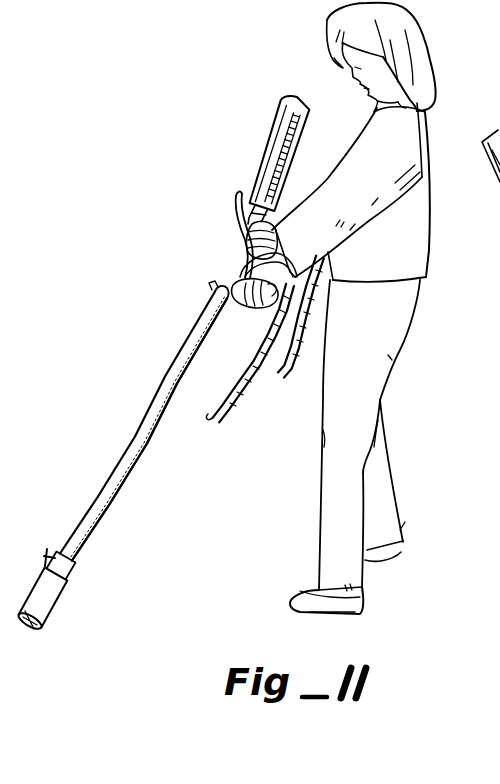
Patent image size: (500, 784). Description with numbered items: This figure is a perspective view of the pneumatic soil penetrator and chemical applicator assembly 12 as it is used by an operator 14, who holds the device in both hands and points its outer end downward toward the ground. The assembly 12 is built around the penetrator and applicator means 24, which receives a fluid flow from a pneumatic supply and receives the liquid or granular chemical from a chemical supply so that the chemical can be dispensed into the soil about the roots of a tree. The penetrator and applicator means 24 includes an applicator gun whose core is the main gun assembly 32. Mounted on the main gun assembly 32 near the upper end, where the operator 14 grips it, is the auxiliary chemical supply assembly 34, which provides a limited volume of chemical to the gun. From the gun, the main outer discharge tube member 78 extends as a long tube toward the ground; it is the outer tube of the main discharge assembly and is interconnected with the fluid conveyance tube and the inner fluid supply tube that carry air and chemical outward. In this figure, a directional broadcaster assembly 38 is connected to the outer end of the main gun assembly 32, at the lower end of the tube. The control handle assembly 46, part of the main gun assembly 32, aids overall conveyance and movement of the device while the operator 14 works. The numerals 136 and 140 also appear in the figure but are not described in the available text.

The pneumatic soil penetrator and chemical applicator assembly 12 is at (155, 394).
The operator 14 is at (403, 131).
The penetrator and applicator means 24 is at (144, 421).
The main gun assembly 32 is at (192, 357).
The auxiliary chemical supply assembly 34 is at (268, 135).
The directional broadcaster assembly 38 is at (62, 597).
The control handle assembly 46 is at (268, 302).
The main outer discharge tube member 78 is at (127, 467).
The blade guard 136 is at (481, 251).
The adjustment member 140 is at (481, 213).